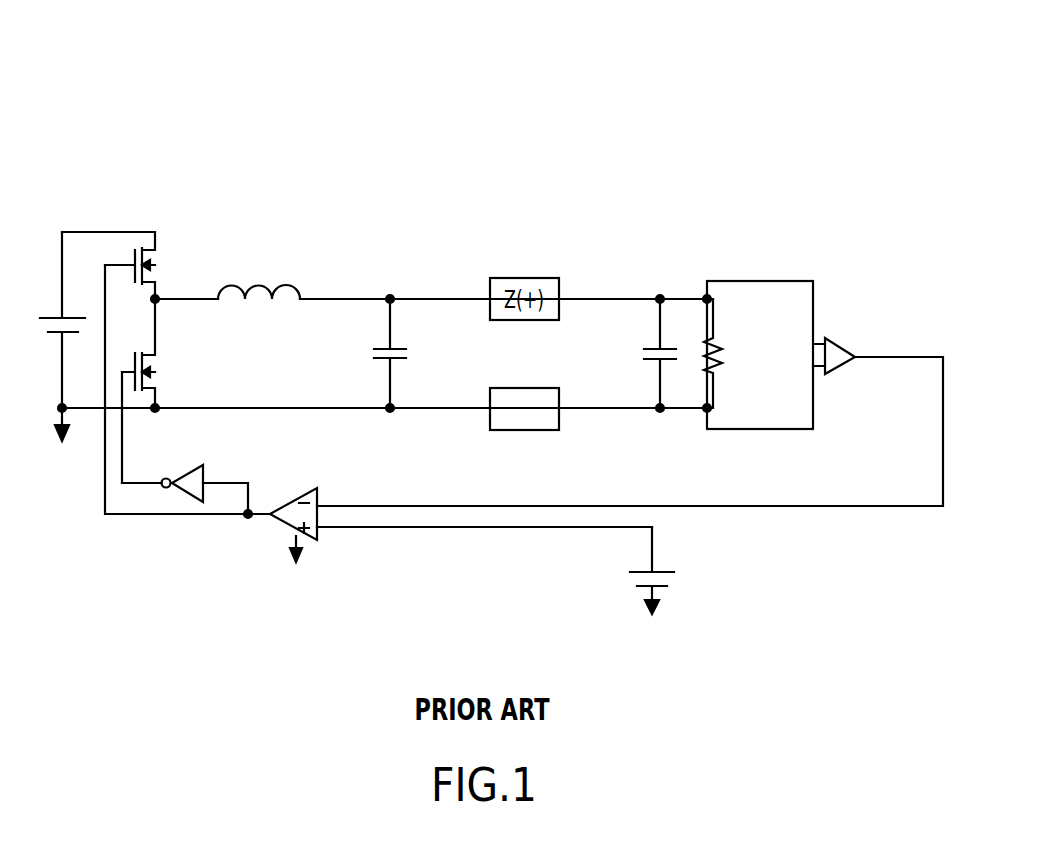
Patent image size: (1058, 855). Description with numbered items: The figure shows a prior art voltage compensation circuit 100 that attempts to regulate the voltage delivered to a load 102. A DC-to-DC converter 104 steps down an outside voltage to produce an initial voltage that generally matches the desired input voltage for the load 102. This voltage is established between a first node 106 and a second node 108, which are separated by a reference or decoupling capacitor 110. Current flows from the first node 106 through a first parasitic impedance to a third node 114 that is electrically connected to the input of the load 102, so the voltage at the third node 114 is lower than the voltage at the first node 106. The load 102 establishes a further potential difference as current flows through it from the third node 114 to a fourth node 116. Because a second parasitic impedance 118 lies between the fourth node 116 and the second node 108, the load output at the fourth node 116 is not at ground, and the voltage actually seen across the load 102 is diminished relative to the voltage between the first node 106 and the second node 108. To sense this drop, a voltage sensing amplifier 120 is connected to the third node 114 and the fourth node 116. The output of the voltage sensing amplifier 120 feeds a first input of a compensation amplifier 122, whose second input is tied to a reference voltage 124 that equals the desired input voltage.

The voltage compensation circuit 100 is at (642, 138).
The load 102 is at (720, 338).
The DC-to-DC converter 104 is at (155, 232).
The first node 106 is at (390, 297).
The second node 108 is at (391, 411).
The decoupling capacitor 110 is at (396, 358).
The third node 114 is at (660, 297).
The fourth node 116 is at (660, 410).
The second parasitic impedance 118 is at (518, 431).
The voltage sensing amplifier 120 is at (843, 348).
The compensation amplifier 122 is at (297, 493).
The reference voltage 124 is at (660, 586).